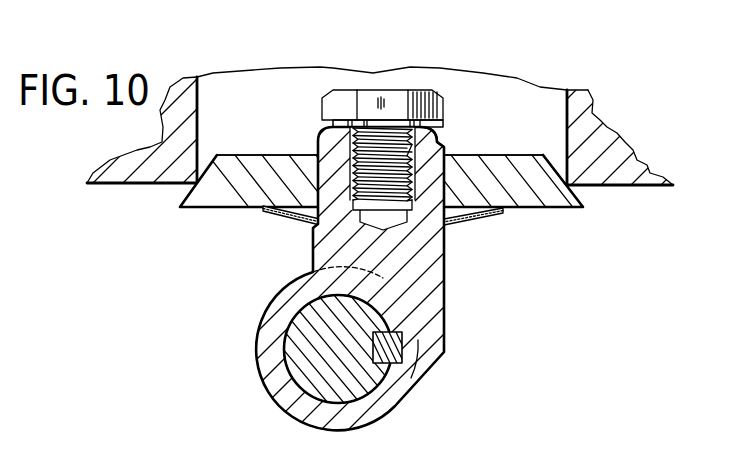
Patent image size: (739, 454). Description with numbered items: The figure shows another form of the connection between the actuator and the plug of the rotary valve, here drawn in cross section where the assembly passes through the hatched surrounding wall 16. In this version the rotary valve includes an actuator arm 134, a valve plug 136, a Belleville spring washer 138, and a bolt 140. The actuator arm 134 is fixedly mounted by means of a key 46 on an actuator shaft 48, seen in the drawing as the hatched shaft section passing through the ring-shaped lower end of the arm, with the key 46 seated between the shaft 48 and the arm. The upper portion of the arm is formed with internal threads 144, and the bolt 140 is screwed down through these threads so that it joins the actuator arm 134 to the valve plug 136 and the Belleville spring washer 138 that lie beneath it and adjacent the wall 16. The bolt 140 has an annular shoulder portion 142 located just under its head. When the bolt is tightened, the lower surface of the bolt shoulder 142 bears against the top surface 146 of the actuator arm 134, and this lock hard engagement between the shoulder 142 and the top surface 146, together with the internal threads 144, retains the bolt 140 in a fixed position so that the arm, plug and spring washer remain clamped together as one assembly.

The wall 16 is at (623, 173).
The key 46 is at (401, 364).
The actuator shaft 48 is at (342, 392).
The actuator arm 134 is at (445, 318).
The valve plug 136 is at (581, 208).
The Belleville spring washer 138 is at (468, 216).
The bolt 140 is at (397, 103).
The annular shoulder portion 142 is at (332, 125).
The internal threads 144 is at (423, 152).
The top surface 146 is at (416, 162).